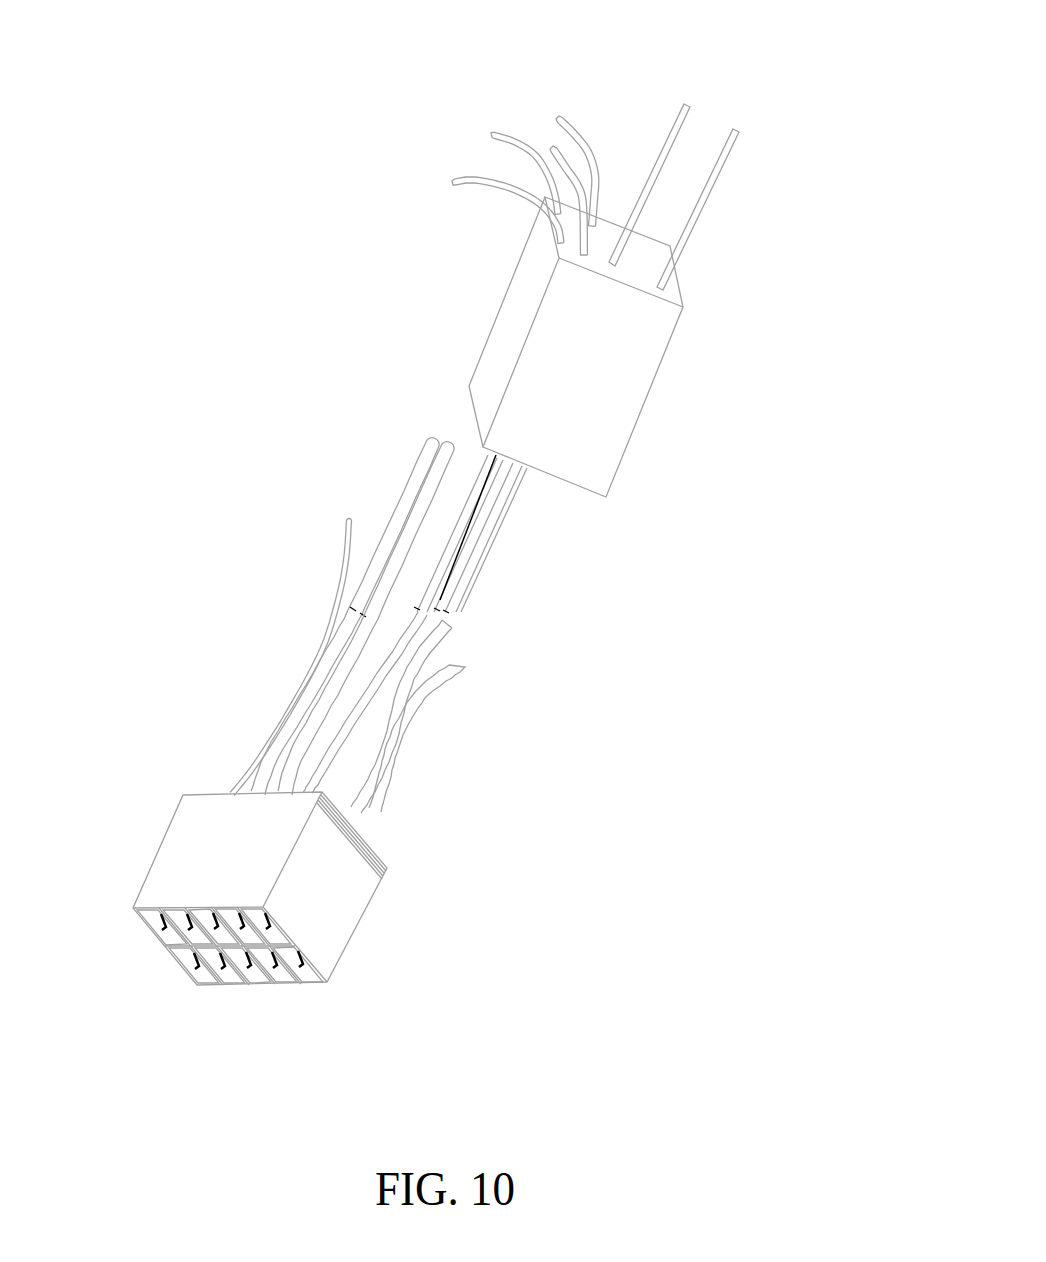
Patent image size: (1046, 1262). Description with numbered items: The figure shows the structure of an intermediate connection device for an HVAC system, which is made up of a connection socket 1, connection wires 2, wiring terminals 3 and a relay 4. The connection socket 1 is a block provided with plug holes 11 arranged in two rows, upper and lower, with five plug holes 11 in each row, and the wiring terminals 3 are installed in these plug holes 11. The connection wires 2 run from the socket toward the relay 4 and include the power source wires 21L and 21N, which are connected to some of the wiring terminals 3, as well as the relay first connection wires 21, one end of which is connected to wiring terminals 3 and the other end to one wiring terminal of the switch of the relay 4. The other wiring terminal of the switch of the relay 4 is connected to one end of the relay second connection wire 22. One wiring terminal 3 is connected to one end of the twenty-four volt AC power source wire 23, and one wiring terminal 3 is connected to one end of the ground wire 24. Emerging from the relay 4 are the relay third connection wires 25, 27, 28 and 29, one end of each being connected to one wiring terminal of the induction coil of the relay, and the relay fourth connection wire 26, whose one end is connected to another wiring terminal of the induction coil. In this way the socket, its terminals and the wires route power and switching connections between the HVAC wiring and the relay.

The connection socket 1 is at (323, 908).
The plug holes 11 is at (157, 921).
The wiring terminals 3 is at (165, 925).
The connection wires 2 is at (447, 622).
The relay first connection wires 21 is at (477, 530).
The power source wire 21L is at (442, 467).
The power source wire 21N is at (401, 515).
The relay second connection wires 22 is at (668, 137).
The 24 V AC power source wire 23 is at (392, 752).
The ground wire 24 is at (325, 700).
The relay third connection wire 25 is at (463, 168).
The relay fourth connection wire 26 is at (712, 168).
The relay third connection wire 27 is at (507, 138).
The relay third connection wire 28 is at (550, 146).
The relay third connection wire 29 is at (577, 137).
The relay 4 is at (613, 393).